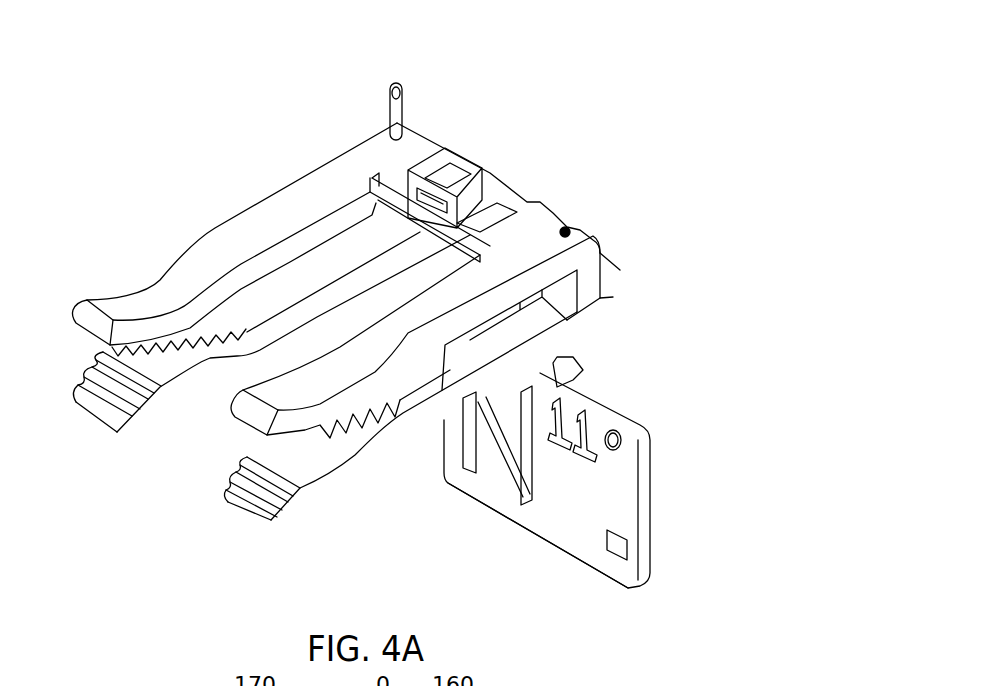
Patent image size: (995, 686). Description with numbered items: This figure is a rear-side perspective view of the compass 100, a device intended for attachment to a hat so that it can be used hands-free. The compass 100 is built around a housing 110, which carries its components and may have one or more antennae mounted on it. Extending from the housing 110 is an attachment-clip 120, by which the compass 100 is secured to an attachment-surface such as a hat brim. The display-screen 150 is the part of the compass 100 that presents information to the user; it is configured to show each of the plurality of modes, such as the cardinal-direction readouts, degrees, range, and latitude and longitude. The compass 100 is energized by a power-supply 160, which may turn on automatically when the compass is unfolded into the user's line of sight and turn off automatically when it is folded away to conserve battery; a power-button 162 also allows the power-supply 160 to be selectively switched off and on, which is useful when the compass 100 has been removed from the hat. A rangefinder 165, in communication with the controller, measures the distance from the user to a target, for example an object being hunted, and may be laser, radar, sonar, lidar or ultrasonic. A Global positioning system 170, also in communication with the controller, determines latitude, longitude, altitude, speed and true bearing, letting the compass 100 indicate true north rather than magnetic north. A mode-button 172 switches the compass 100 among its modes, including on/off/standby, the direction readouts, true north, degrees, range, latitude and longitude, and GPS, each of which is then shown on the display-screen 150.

The compass 100 is at (717, 38).
The housing 110 is at (607, 493).
The attachment-clip 120 is at (233, 222).
The display-screen 150 is at (582, 528).
The power-supply 160 is at (433, 143).
The power-button 162 is at (460, 150).
The rangefinder 165 is at (567, 230).
The Global positioning system 170 is at (393, 115).
The mode-button 172 is at (623, 547).